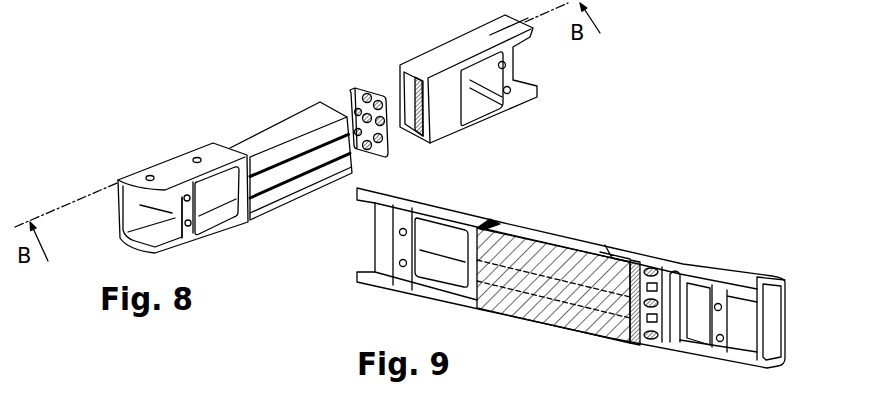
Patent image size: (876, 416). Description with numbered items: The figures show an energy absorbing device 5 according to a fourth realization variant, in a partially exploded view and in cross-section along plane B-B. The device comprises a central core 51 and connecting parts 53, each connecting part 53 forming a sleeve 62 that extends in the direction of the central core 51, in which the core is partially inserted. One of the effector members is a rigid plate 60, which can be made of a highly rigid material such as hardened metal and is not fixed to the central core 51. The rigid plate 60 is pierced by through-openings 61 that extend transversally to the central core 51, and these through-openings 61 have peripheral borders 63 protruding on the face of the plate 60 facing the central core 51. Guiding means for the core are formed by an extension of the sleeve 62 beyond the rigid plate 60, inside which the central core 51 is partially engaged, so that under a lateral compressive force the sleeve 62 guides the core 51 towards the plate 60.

In FIG. 8, the absorbing device 5 is at (196, 143).
In FIG. 9, the absorbing device 5 is at (570, 222).
In FIG. 8, the central core 51 is at (281, 204).
In FIG. 9, the central core 51 is at (531, 329).
In FIG. 8, the connecting part 53 is at (176, 168).
In FIG. 9, the connecting part 53 is at (764, 322).
In FIG. 8, the rigid plate 60 is at (347, 97).
In FIG. 9, the rigid plate 60 is at (672, 280).
In FIG. 8, the through-openings 61 is at (367, 84).
In FIG. 9, the through-openings 61 is at (657, 336).
In FIG. 9, the sleeve 62 is at (610, 258).
In FIG. 9, the peripheral borders 63 is at (625, 316).